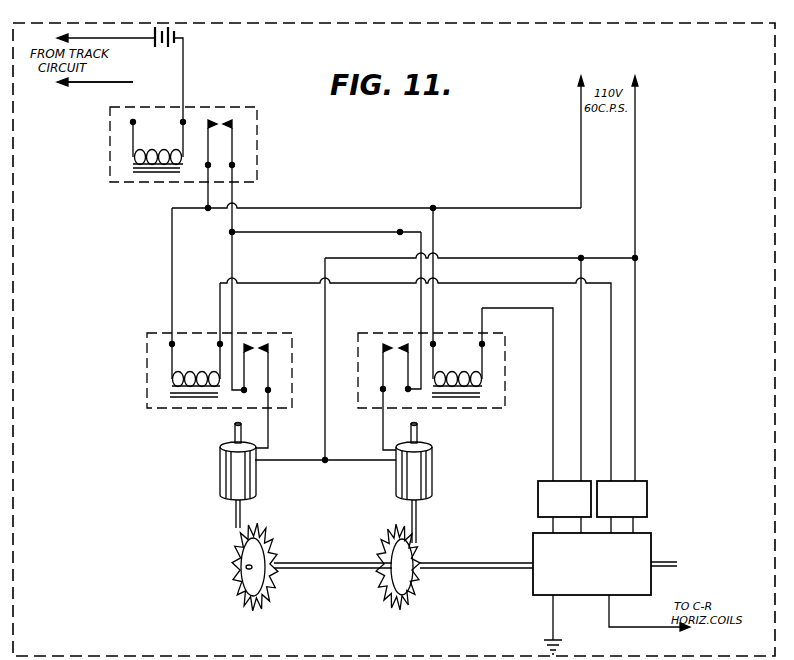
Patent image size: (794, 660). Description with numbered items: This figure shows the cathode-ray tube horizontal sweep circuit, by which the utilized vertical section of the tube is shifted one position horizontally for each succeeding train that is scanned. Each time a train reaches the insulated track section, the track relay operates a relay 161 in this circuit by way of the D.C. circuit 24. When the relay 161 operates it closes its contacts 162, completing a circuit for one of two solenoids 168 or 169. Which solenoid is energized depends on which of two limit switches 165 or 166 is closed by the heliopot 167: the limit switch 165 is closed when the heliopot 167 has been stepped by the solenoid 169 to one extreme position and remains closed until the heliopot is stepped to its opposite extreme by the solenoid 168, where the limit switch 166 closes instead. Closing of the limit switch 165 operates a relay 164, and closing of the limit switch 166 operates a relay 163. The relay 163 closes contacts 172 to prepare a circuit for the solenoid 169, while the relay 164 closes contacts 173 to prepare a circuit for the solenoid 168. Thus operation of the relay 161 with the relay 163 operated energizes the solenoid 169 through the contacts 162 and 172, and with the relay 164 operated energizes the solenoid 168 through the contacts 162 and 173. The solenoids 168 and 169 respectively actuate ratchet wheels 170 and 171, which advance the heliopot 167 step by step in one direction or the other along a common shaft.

The D.C. circuit 24 is at (82, 86).
The relay 161 is at (150, 154).
The contacts 162 is at (216, 124).
The relay 163 is at (177, 401).
The relay 164 is at (490, 385).
The limit switch 165 is at (538, 490).
The limit switch 166 is at (648, 493).
The heliopot 167 is at (652, 541).
The solenoid 168 is at (434, 470).
The solenoid 169 is at (220, 462).
The ratchet wheel 170 is at (418, 556).
The ratchet wheel 171 is at (240, 545).
The contacts 172 is at (253, 350).
The contacts 173 is at (394, 348).